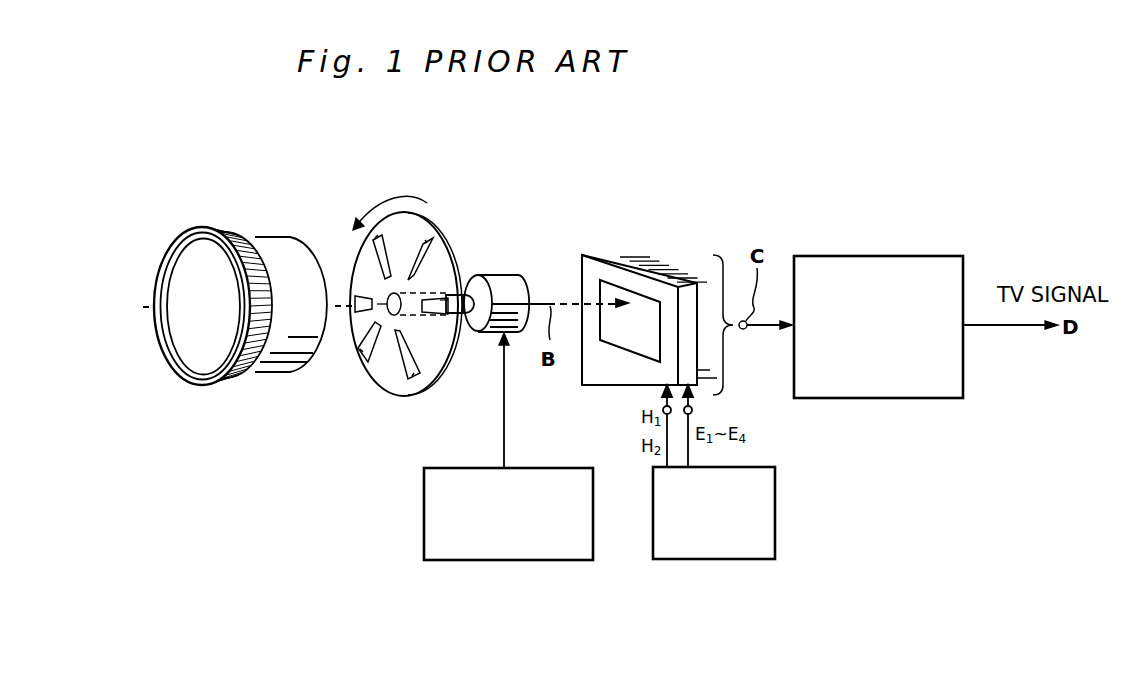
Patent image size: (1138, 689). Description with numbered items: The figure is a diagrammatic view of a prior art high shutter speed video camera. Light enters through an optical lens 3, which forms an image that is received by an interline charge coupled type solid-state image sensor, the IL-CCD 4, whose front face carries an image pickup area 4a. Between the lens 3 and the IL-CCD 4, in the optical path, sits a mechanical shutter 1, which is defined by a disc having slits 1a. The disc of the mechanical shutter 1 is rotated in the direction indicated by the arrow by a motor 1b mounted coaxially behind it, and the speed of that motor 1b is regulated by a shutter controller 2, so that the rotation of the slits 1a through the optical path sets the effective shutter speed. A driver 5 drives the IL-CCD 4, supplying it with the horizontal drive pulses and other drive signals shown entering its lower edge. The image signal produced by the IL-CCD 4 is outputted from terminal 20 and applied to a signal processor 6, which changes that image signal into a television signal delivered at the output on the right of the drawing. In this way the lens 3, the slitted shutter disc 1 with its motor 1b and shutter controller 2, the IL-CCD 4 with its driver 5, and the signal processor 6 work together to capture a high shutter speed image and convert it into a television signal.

The mechanical shutter 1 is at (383, 373).
The slits 1a is at (440, 292).
The motor 1b is at (507, 285).
The shutter controller 2 is at (502, 553).
The optical lens 3 is at (200, 360).
The interline charge coupled type solid-state image sensor (IL-CCD) 4 is at (600, 258).
The image pickup area 4a is at (625, 333).
The driver 5 is at (718, 548).
The signal processor 6 is at (895, 270).
The terminal 20 is at (745, 330).